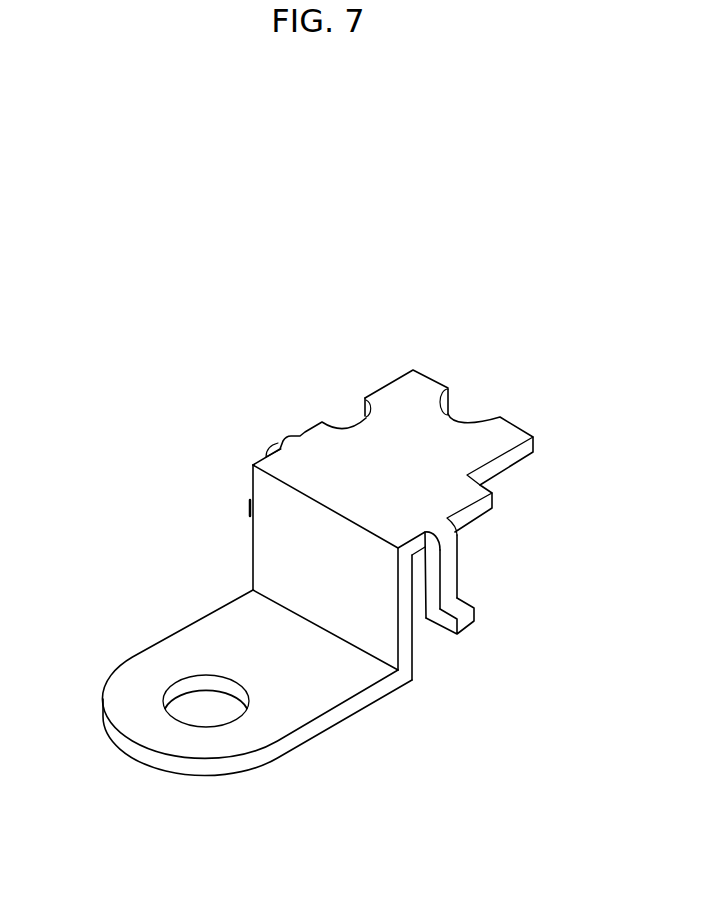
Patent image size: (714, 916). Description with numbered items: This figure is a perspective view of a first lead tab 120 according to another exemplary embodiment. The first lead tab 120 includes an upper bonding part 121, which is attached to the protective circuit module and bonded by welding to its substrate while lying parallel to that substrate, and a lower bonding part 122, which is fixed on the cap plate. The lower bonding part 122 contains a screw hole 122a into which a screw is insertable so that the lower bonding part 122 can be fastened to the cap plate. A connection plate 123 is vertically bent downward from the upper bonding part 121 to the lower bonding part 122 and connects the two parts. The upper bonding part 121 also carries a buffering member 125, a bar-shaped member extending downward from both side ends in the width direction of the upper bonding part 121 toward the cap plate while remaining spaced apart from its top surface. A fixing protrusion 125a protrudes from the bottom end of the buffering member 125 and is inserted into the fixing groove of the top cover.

The first lead tab 120 is at (394, 344).
The upper bonding part 121 is at (428, 437).
The lower bonding part 122 is at (312, 692).
The screw hole 122a is at (177, 693).
The connection plate 123 is at (263, 537).
The buffering member 125 is at (277, 441).
The fixing protrusion 125a is at (473, 617).